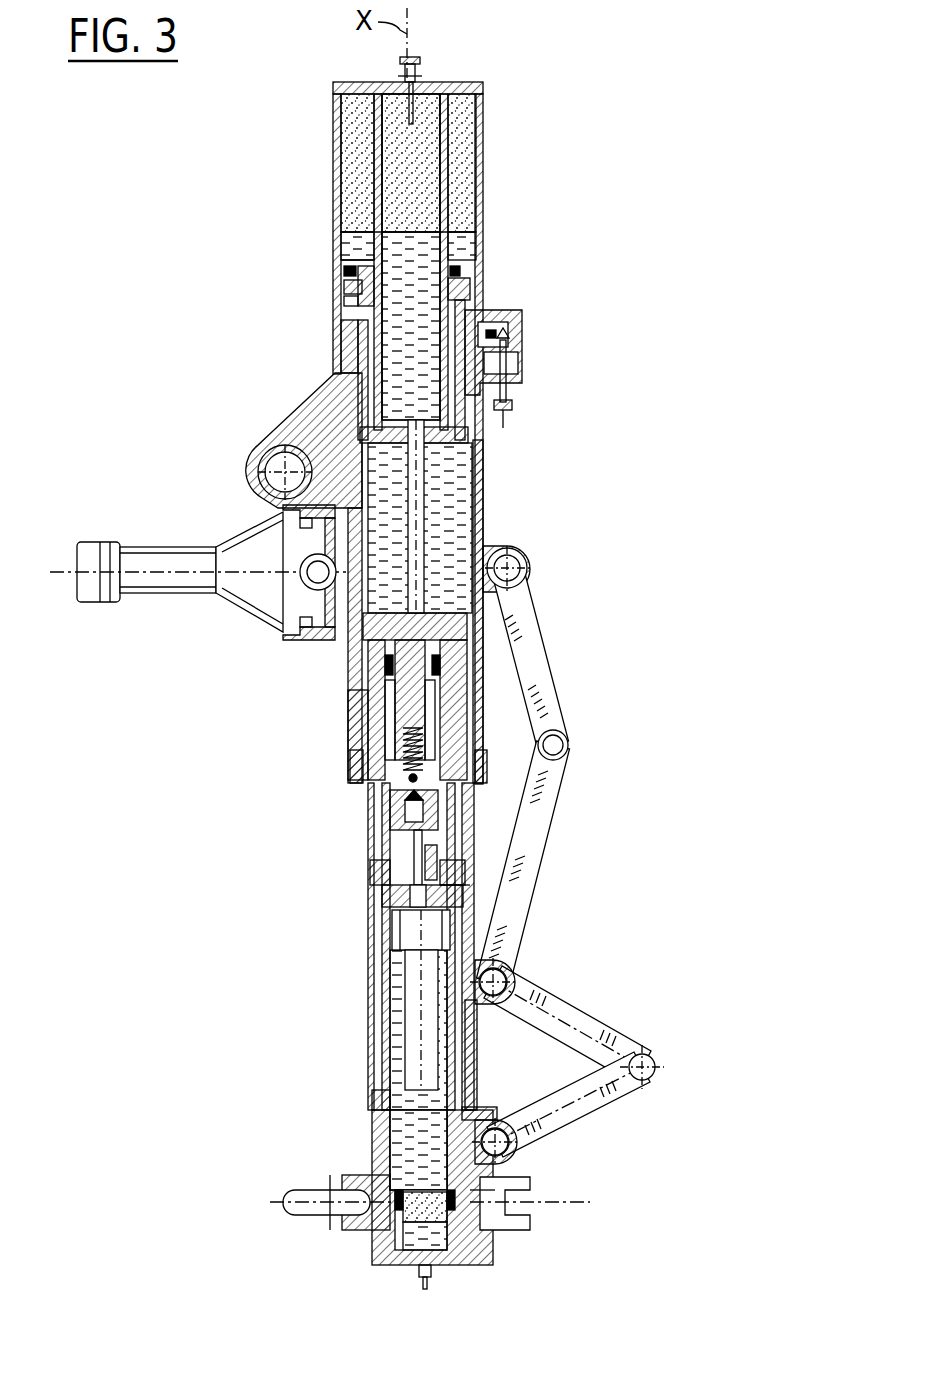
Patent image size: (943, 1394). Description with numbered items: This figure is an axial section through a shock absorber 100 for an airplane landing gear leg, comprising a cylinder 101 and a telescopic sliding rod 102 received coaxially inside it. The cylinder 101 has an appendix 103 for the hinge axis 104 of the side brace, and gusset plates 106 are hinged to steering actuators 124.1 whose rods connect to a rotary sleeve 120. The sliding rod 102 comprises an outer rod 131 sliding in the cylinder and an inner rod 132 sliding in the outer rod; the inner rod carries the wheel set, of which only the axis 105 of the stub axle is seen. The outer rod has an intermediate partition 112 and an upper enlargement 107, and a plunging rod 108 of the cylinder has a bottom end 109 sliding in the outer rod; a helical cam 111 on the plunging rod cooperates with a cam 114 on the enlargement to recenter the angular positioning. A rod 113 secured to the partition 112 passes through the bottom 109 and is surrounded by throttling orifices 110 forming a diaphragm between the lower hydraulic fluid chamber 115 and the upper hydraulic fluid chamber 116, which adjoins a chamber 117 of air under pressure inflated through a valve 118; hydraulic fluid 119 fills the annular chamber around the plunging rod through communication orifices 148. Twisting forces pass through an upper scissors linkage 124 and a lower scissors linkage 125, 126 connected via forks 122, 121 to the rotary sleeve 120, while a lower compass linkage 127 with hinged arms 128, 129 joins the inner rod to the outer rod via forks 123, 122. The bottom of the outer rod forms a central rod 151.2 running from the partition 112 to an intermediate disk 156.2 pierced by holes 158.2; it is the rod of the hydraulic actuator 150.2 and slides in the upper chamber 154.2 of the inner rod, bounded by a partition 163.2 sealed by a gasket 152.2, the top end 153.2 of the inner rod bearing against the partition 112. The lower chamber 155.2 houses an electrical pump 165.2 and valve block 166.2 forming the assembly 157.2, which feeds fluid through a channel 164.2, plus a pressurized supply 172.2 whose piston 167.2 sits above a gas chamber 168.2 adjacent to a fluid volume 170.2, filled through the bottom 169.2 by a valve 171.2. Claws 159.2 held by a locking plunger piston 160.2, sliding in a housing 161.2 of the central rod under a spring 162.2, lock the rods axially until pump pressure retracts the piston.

The shock absorber 100 is at (565, 176).
The cylinder 101 is at (487, 190).
The sliding rod 102 is at (368, 894).
The appendix 103 is at (320, 414).
The hinge axis 104 is at (257, 490).
The axis 105 is at (535, 1212).
The gusset plates 106 is at (325, 628).
The upper enlargement 107 is at (350, 280).
The plunging rod 108 is at (378, 185).
The bottom end 109 is at (292, 432).
The throttling orifices 110 is at (470, 445).
The helical cam 111 is at (508, 398).
The intermediate partition 112 is at (470, 630).
The rod 113 is at (420, 512).
The cam 114 is at (482, 358).
The lower hydraulic fluid chamber 115 is at (450, 527).
The upper hydraulic fluid chamber 116 is at (402, 333).
The gas chamber 117 is at (388, 150).
The valve 118 is at (423, 70).
The hydraulic fluid 119 is at (365, 245).
The rotary sleeve 120 is at (500, 546).
The fork 121 is at (540, 582).
The fork 122 is at (515, 962).
The fork 123 is at (515, 1157).
The upper scissors linkage 124 is at (572, 745).
The actuators 124.1 is at (168, 560).
The lower scissors linkage 125 is at (537, 680).
The lower scissors linkage 126 is at (547, 857).
The lower compass linkage 127 is at (625, 1032).
The hinged arm 128 is at (567, 1017).
The hinged arm 129 is at (583, 1108).
The outer rod 131 is at (368, 1038).
The inner rod 132 is at (357, 1150).
The communication orifices 148 is at (473, 238).
The hydraulic actuator 150.2 is at (374, 962).
The central rod 151.2 is at (375, 702).
The gasket 152.2 is at (382, 660).
The top end 153.2 is at (470, 648).
The upper chamber 154.2 is at (470, 718).
The lower chamber 155.2 is at (392, 1118).
The intermediate disk 156.2 is at (373, 872).
The assembly 157.2 is at (396, 1065).
The holes 158.2 is at (480, 860).
The claws 159.2 is at (440, 852).
The locking plunger piston 160.2 is at (388, 830).
The inner housing 161.2 is at (380, 763).
The spring 162.2 is at (385, 788).
The partition 163.2 is at (374, 908).
The channel 164.2 is at (477, 888).
The electrical pump 165.2 is at (477, 1040).
The electrically controlled valve block 166.2 is at (448, 925).
The piston 167.2 is at (440, 1182).
The gas chamber 168.2 is at (470, 1225).
The bottom 169.2 is at (387, 1267).
The volume of hydraulic fluid 170.2 is at (377, 1243).
The valve 171.2 is at (433, 1275).
The pressurized supply 172.2 is at (530, 1187).